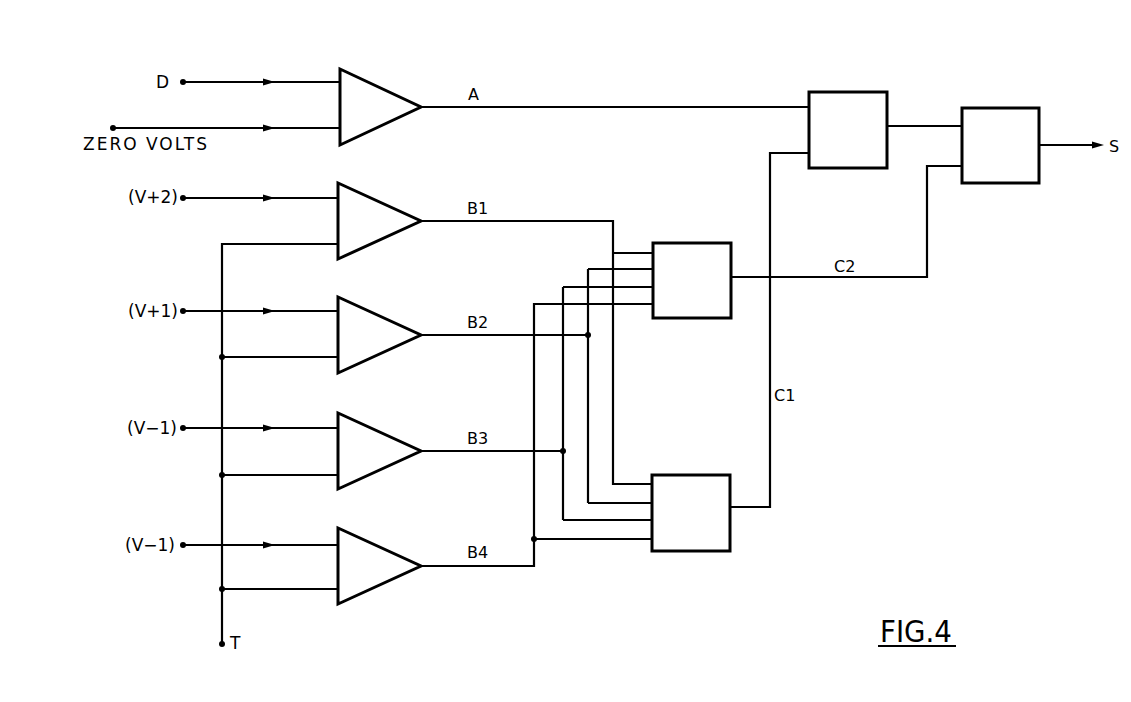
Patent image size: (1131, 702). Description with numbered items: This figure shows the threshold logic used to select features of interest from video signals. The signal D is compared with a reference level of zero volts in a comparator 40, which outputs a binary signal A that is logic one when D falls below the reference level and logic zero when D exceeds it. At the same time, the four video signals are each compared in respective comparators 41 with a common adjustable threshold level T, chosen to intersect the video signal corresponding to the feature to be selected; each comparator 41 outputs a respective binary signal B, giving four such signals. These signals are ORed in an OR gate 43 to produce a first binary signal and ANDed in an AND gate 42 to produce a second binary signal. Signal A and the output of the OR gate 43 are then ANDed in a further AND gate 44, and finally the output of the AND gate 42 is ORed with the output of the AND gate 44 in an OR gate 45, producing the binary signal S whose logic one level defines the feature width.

The comparator 40 is at (401, 64).
The comparators 41 is at (407, 191).
The AND gate 42 is at (702, 243).
The OR gate 43 is at (697, 475).
The further AND gate 44 is at (865, 92).
The OR gate 45 is at (1018, 108).